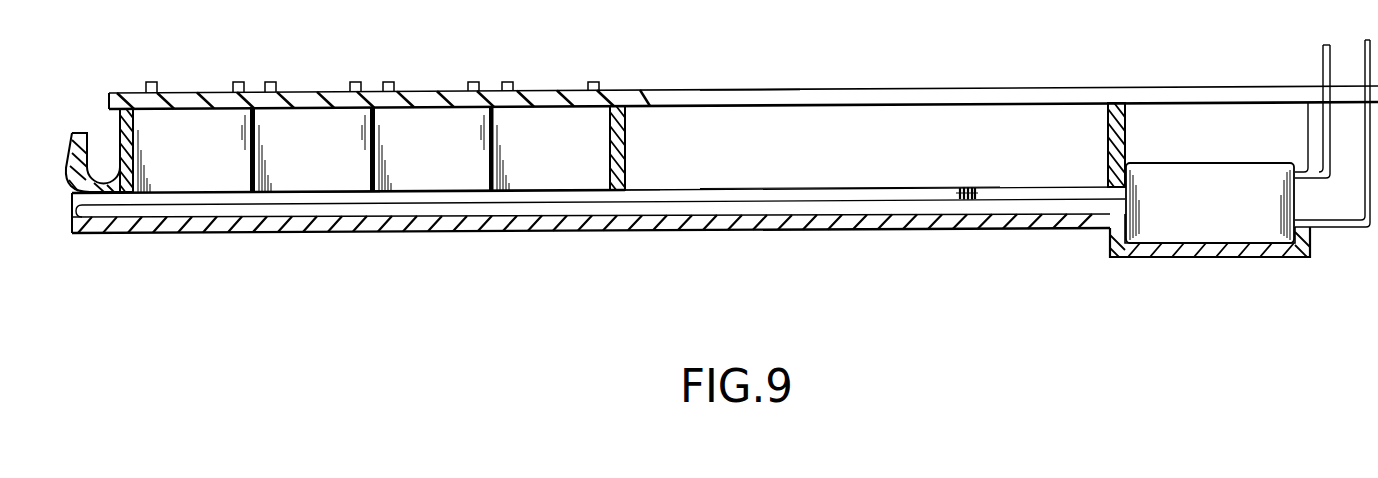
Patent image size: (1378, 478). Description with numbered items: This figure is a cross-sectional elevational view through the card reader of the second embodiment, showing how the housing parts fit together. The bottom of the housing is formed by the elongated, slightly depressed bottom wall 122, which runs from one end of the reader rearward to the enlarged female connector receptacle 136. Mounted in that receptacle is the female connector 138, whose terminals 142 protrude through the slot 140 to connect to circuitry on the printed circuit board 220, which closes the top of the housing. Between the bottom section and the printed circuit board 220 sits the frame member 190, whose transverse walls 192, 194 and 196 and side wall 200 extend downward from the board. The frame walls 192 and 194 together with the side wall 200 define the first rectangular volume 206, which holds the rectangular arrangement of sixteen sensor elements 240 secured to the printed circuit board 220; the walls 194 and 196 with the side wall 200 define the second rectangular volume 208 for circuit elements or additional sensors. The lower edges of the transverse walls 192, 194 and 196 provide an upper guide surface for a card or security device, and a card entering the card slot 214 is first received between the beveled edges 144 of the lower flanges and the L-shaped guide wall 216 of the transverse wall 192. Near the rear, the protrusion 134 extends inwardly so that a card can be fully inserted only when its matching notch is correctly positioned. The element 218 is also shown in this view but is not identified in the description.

The bottom wall 122 is at (250, 212).
The protrusion 134 is at (975, 192).
The female connector receptacle 136 is at (1197, 230).
The female connector 138 is at (1210, 203).
The slot 140 is at (1298, 203).
The terminals 142 is at (1365, 58).
The beveled edges 144 is at (78, 212).
The frame member 190 is at (1132, 119).
The transverse wall 192 is at (128, 152).
The transverse wall 194 is at (624, 134).
The transverse wall 196 is at (1125, 143).
The side wall 200 is at (808, 125).
The first rectangular volume 206 is at (350, 160).
The second rectangular volume 208 is at (850, 169).
The card slot 214 is at (618, 196).
The L-shaped guide wall 216 is at (68, 186).
The floor 218 is at (342, 188).
The printed circuit board 220 is at (760, 78).
The sensor elements 240 is at (305, 118).